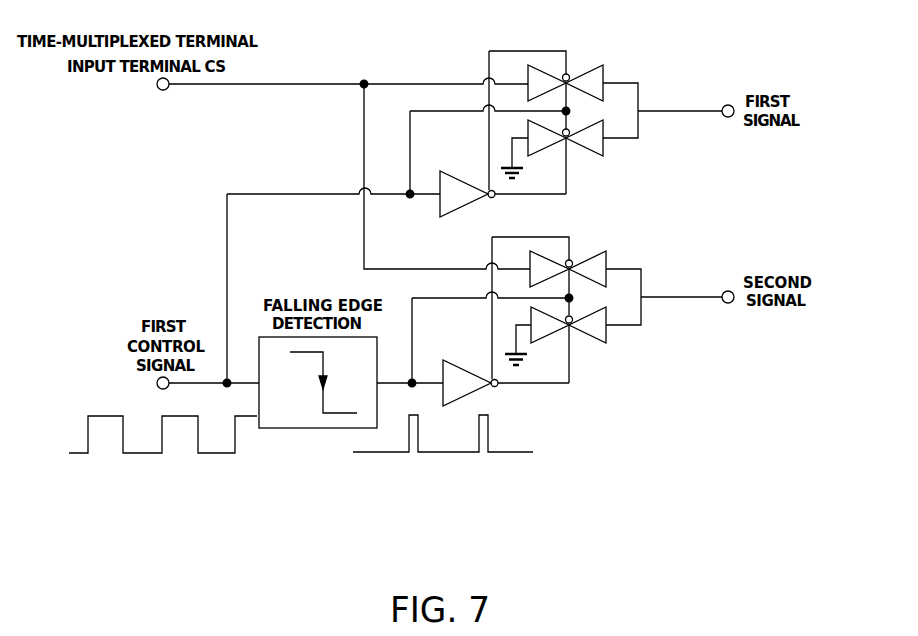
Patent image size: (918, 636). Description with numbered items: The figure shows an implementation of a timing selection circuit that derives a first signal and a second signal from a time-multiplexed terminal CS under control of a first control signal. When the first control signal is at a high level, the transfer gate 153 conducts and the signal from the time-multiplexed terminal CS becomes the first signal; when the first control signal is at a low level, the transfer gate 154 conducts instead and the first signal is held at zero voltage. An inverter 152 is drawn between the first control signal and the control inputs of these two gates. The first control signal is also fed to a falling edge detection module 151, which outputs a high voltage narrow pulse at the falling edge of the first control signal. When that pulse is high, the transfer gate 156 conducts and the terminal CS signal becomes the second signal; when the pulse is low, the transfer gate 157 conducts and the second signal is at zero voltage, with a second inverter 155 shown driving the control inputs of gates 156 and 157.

The falling edge detection module 151 is at (318, 382).
The inverter 152 is at (467, 183).
The transfer gate 153 is at (588, 78).
The transfer gate 154 is at (588, 144).
The inverter 155 is at (470, 370).
The transfer gate 156 is at (589, 265).
The transfer gate 157 is at (590, 331).